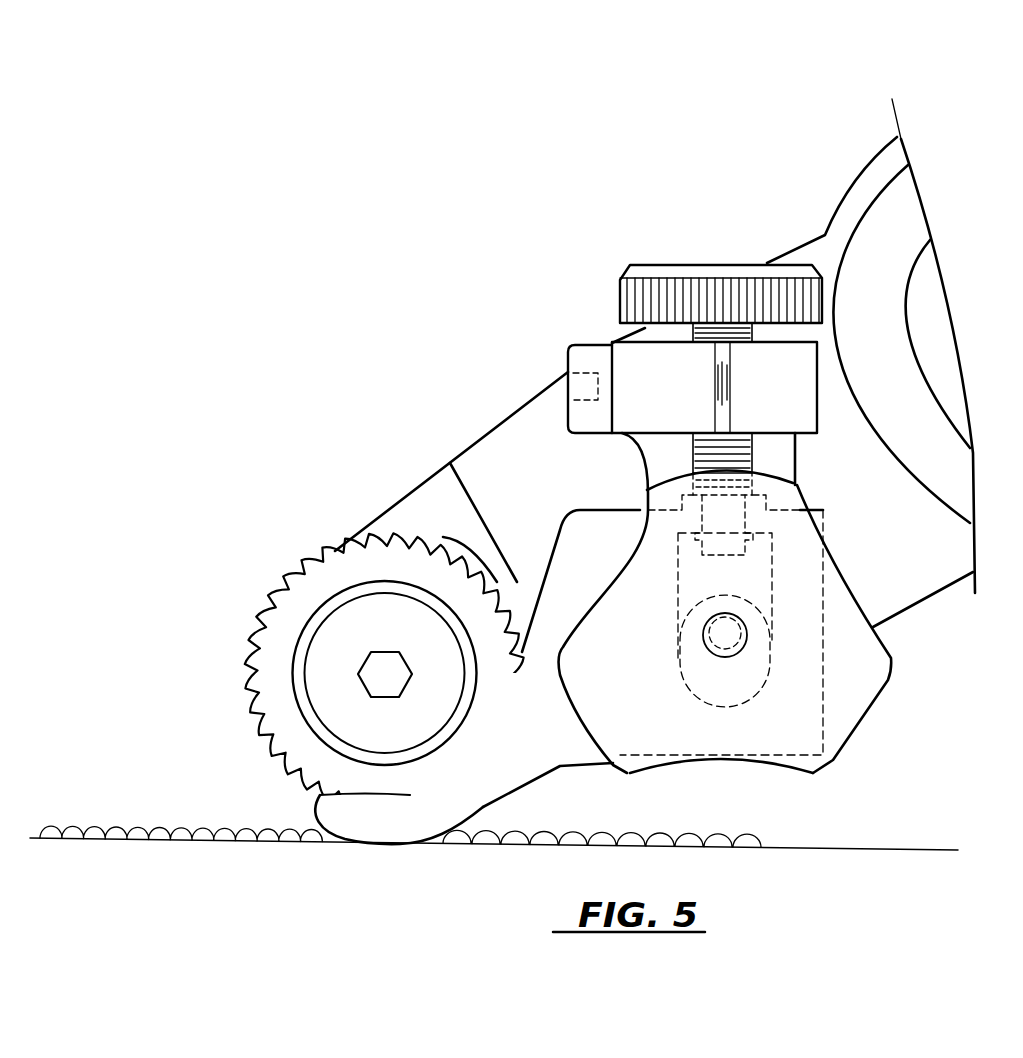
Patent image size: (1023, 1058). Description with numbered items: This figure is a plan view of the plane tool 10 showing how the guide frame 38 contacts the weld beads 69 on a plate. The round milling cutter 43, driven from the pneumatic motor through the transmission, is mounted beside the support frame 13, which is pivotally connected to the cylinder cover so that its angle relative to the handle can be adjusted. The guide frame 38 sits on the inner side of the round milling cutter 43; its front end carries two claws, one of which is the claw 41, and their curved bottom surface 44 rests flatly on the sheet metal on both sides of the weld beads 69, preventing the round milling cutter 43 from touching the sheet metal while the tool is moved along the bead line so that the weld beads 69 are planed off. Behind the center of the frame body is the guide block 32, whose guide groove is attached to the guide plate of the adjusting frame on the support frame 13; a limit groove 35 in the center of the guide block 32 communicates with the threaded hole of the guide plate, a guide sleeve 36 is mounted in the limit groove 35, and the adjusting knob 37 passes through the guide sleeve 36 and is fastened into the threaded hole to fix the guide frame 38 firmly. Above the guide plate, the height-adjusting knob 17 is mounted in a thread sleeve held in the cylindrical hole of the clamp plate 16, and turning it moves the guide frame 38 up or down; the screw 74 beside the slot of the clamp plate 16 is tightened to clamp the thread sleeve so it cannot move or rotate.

The plane tool 10 is at (360, 378).
The support frame 13 is at (503, 448).
The clamp plate 16 is at (642, 377).
The height-adjusting knob 17 is at (657, 283).
The screw 74 is at (582, 362).
The guide block 32 is at (812, 521).
The limit groove 35 is at (762, 558).
The guide sleeve 36 is at (747, 620).
The adjusting knob 37 is at (845, 713).
The guide frame 38 is at (657, 780).
The claw 41 is at (537, 760).
The round milling cutter 43 is at (328, 570).
The bottom surface 44 is at (388, 846).
The weld beads 69 is at (147, 830).